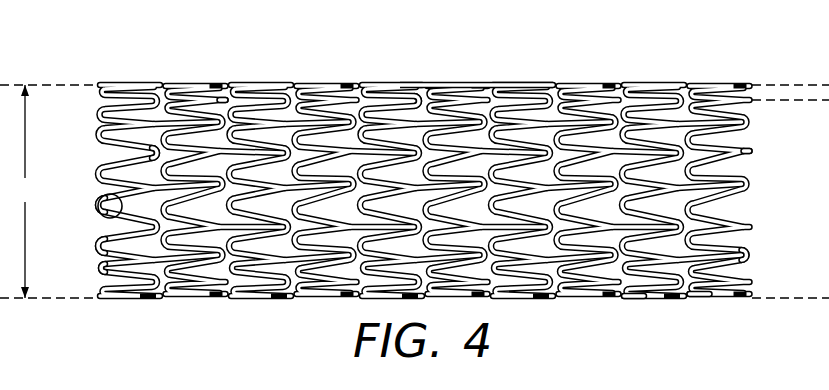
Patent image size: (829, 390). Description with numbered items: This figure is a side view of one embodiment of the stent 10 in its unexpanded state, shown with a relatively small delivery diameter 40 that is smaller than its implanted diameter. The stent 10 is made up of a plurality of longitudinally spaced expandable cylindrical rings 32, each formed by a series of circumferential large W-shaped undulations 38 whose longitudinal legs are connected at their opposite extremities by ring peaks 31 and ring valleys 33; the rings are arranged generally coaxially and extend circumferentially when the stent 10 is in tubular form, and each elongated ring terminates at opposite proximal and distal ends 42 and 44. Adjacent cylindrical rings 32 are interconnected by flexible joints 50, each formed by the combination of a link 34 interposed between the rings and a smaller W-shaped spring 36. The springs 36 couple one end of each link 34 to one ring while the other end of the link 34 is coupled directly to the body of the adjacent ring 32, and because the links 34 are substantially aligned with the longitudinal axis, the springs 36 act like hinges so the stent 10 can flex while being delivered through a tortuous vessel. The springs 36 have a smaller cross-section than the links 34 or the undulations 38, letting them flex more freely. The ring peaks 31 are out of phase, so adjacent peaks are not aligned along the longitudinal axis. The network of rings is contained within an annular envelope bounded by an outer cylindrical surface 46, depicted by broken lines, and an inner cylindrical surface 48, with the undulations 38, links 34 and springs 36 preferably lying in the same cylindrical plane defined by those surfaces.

The stent 10 is at (126, 79).
The ring peaks 31 is at (752, 152).
The cylindrical rings 32 is at (527, 85).
The ring valleys 33 is at (98, 208).
The links 34 is at (229, 93).
The springs 36 is at (141, 156).
The W-shaped undulations 38 is at (99, 269).
The delivery diameter 40 is at (22, 191).
The proximal end 42 is at (622, 300).
The distal end 44 is at (688, 300).
The outer cylindrical surface 46 is at (785, 83).
The inner cylindrical surface 48 is at (794, 101).
The flexible joints 50 is at (752, 262).